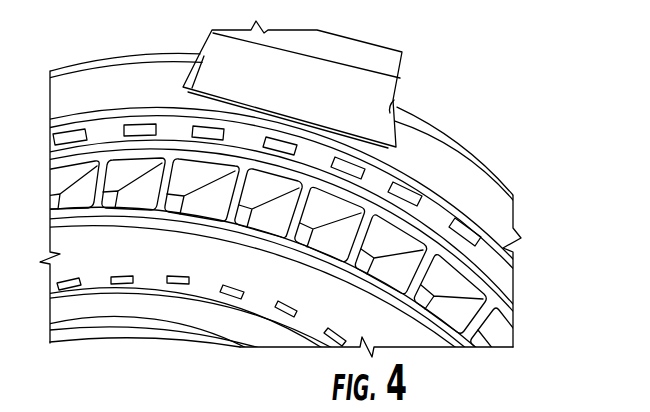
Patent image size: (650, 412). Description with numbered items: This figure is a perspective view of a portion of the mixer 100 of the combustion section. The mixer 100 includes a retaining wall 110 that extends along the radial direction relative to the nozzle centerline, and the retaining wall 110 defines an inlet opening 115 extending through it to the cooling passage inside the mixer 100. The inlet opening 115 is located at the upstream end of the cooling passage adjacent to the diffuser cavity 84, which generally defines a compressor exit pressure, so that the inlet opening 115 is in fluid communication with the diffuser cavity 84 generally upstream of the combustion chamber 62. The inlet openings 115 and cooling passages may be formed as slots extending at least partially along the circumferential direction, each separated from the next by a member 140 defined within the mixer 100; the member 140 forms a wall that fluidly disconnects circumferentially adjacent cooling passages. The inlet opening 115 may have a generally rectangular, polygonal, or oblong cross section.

The combustion chamber 62 is at (420, 43).
The mixer 100 is at (452, 68).
The member 140 is at (385, 185).
The retaining wall 110 is at (431, 165).
The inlet opening 115 is at (440, 193).
The diffuser cavity 84 is at (168, 362).